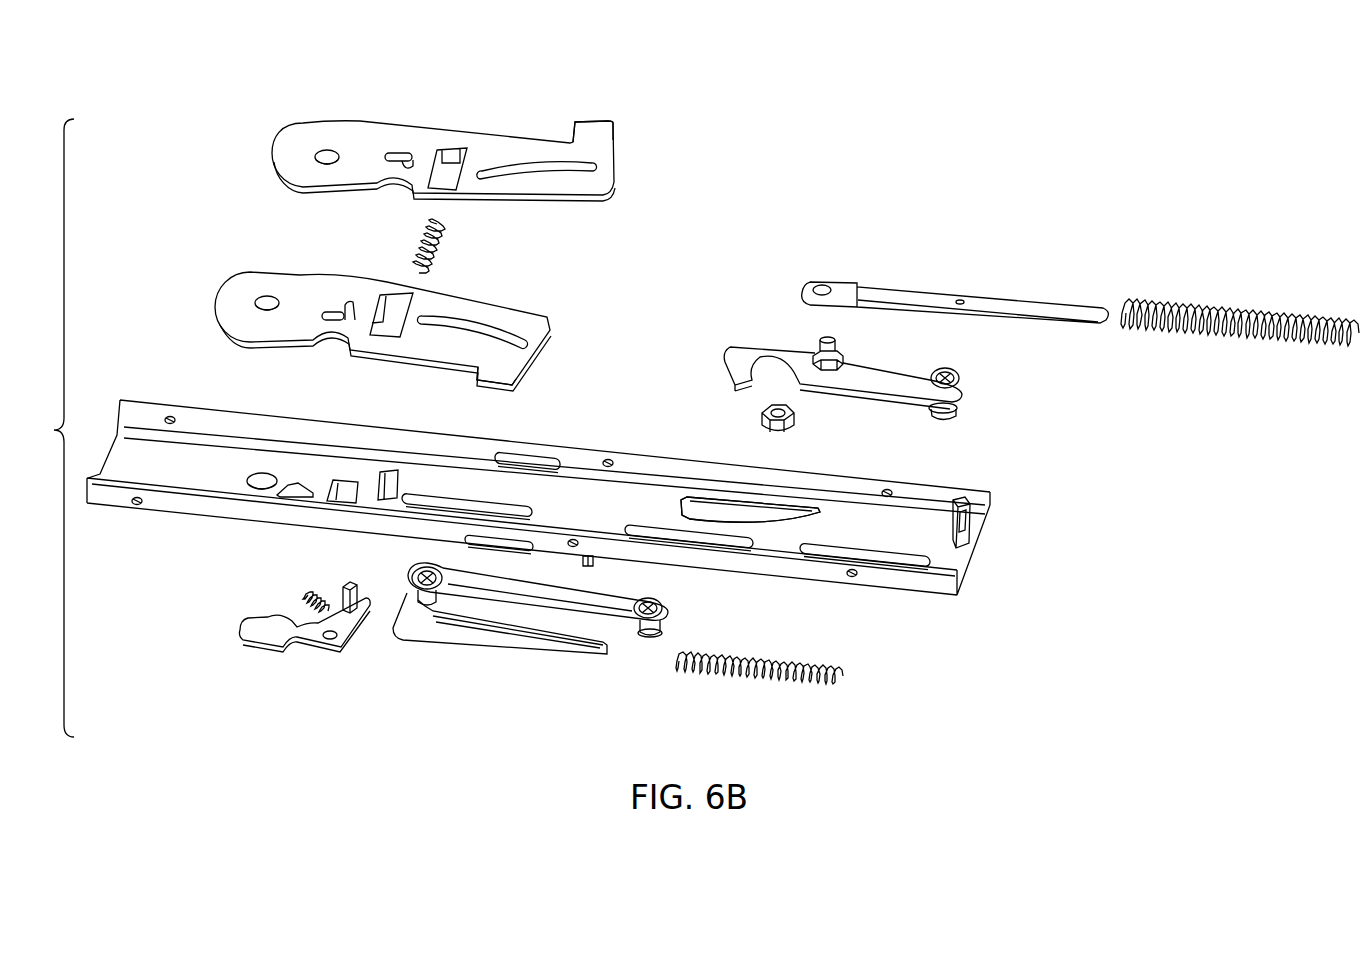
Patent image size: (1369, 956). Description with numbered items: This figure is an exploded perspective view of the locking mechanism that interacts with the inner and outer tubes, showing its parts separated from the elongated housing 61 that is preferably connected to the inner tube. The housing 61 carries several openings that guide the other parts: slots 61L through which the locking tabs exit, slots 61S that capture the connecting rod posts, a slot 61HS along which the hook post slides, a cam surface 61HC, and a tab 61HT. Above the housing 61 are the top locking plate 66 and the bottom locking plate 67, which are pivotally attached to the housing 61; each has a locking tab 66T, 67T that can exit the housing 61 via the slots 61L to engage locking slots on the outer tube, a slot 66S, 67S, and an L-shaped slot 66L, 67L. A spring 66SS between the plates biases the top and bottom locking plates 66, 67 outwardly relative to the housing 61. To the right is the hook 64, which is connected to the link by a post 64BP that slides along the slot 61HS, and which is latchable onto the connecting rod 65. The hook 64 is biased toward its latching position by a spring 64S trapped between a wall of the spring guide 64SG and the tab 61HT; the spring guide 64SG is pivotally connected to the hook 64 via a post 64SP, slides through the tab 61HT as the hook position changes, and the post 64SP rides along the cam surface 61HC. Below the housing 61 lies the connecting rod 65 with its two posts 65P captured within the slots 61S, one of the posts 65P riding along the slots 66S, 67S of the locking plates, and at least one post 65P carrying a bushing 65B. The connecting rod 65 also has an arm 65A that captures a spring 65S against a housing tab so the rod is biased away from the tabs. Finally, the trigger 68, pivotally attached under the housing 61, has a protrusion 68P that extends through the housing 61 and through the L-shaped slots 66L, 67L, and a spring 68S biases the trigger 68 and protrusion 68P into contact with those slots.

The housing 61 is at (163, 505).
The slots 61L is at (530, 460).
The slots 61S is at (513, 500).
The slot 61HS is at (907, 557).
The cam surface 61HC is at (780, 522).
The tab 61HT is at (968, 538).
The top locking plate 66 is at (606, 195).
The L-shaped slot 66L is at (411, 152).
The slot 66S is at (511, 168).
The locking tab 66T is at (611, 121).
The spring 66SS is at (441, 244).
The bottom locking plate 67 is at (548, 312).
The L-shaped slot 67L is at (337, 320).
The slot 67S is at (516, 350).
The locking tab 67T is at (489, 378).
The hook 64 is at (873, 373).
The spring guide 64SG is at (1030, 307).
The spring 64S is at (1178, 303).
The post 64SP is at (814, 338).
The post 64BP is at (960, 411).
The connecting rod 65 is at (555, 623).
The arm 65A is at (478, 640).
The posts 65P is at (417, 622).
The spring 65S is at (753, 677).
The bushing 65B is at (793, 421).
The trigger 68 is at (268, 637).
The spring 68S is at (308, 595).
The protrusion 68P is at (342, 586).